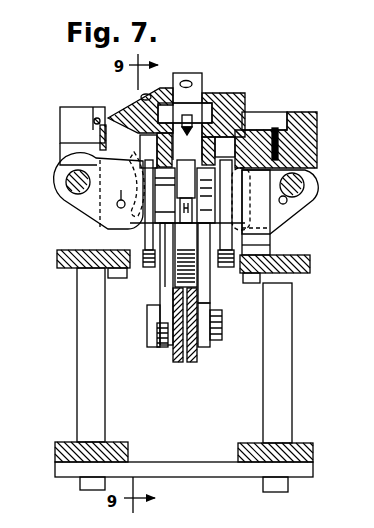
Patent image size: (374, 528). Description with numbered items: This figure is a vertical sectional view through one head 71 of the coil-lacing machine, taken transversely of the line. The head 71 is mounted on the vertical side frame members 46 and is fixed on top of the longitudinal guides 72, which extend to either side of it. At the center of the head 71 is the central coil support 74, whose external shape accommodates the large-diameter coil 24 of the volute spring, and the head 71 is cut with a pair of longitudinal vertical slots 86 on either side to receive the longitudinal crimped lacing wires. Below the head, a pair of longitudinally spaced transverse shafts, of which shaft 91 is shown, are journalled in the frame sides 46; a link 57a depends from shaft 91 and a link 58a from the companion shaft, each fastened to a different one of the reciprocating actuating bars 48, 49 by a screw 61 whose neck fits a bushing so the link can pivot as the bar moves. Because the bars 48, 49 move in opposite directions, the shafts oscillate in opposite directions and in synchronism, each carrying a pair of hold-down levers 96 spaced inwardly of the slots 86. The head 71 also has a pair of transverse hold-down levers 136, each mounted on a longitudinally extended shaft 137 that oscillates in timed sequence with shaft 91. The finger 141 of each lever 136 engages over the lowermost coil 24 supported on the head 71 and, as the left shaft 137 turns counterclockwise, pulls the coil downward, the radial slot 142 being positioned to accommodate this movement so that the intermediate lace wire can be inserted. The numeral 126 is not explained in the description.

The large-diameter coil 24 is at (280, 128).
The vertical side frame member 46 is at (266, 233).
The actuating bar 48 is at (175, 361).
The actuating bar 49 is at (190, 362).
The link 57a is at (165, 271).
The link 58a is at (203, 312).
The screw 61 is at (150, 332).
The head 71 is at (247, 92).
The longitudinal guide 72 is at (165, 136).
The central coil support 74 is at (203, 77).
The longitudinal vertical slot 86 is at (277, 117).
The transverse shaft 91 is at (165, 195).
The hold-down lever 96 is at (147, 232).
The collar 126 is at (174, 279).
The transverse hold-down lever 136 is at (72, 197).
The longitudinally extended shaft 137 is at (66, 182).
The finger 141 is at (138, 184).
The radial slot 142 is at (121, 206).